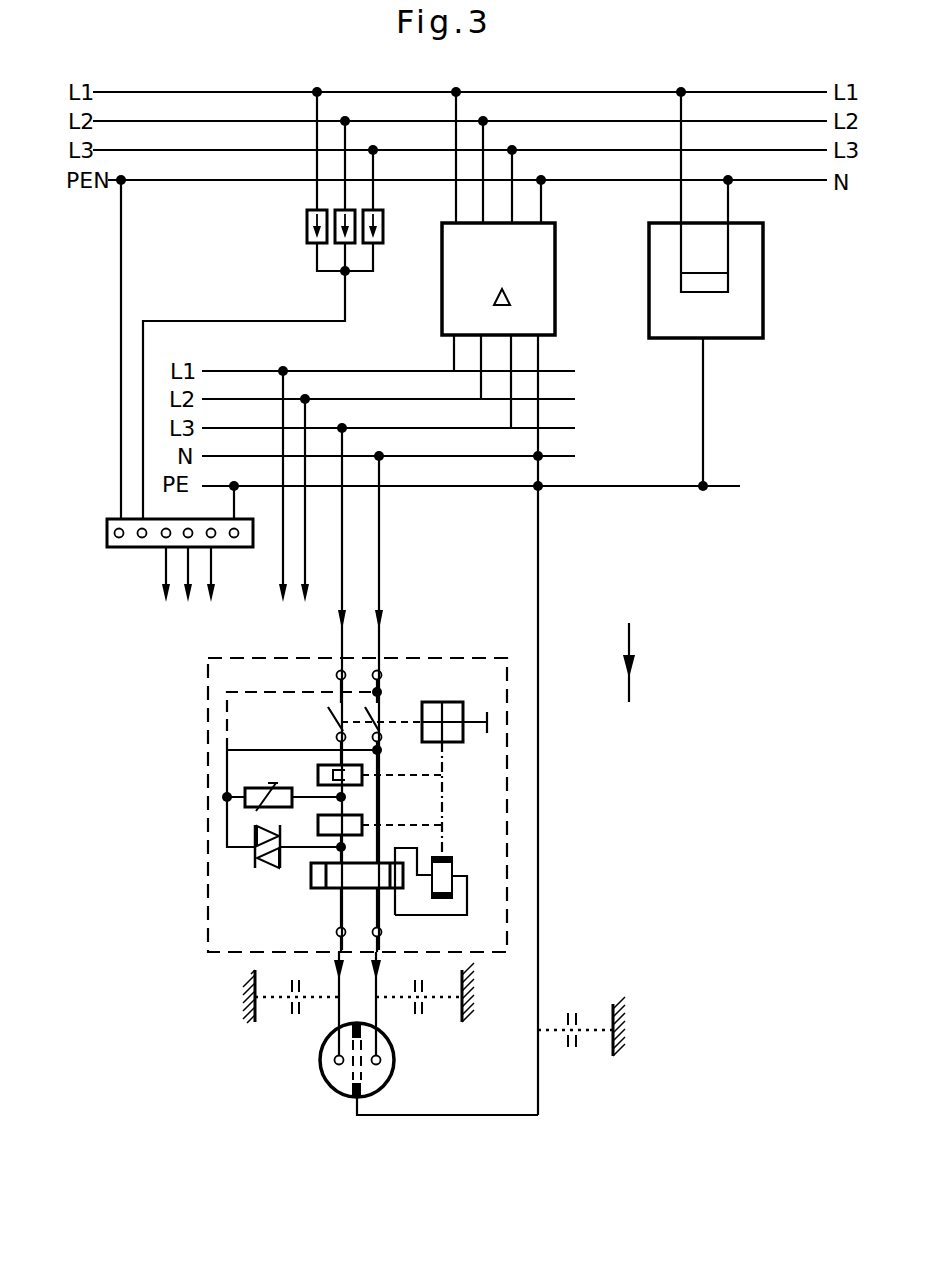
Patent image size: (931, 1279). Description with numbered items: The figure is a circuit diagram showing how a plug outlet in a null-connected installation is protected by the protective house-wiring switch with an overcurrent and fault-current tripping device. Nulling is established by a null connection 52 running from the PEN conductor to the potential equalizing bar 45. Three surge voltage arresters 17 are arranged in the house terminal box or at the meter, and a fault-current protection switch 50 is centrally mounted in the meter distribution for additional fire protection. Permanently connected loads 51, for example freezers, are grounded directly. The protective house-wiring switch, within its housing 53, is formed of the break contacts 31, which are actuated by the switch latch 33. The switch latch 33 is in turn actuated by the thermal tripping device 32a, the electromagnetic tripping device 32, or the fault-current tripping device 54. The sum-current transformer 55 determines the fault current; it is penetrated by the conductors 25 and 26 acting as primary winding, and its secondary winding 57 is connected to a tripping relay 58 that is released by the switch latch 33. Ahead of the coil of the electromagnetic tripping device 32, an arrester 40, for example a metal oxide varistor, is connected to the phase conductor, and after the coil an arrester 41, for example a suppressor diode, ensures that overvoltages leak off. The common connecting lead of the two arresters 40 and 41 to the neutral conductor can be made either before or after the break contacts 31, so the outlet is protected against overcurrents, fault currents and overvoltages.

The surge voltage arresters 17 is at (307, 236).
The fault-current protection switch 50 is at (555, 253).
The permanently connected loads 51 is at (748, 323).
The null connection 52 is at (118, 390).
The potential equalizing bar 45 is at (131, 548).
The conductor 25 is at (342, 533).
The conductor 26 is at (379, 573).
The switch latch 33 is at (448, 706).
The housing 53 is at (222, 688).
The break contacts 31 is at (328, 720).
The thermal tripping device 32a is at (318, 777).
The arrester 40 is at (264, 810).
The electromagnetic tripping device 32 is at (318, 832).
The arrester 41 is at (272, 868).
The sum-current transformer 55 is at (311, 885).
The fault-current tripping device 54 is at (357, 890).
The secondary winding 57 is at (399, 872).
The tripping relay 58 is at (454, 857).